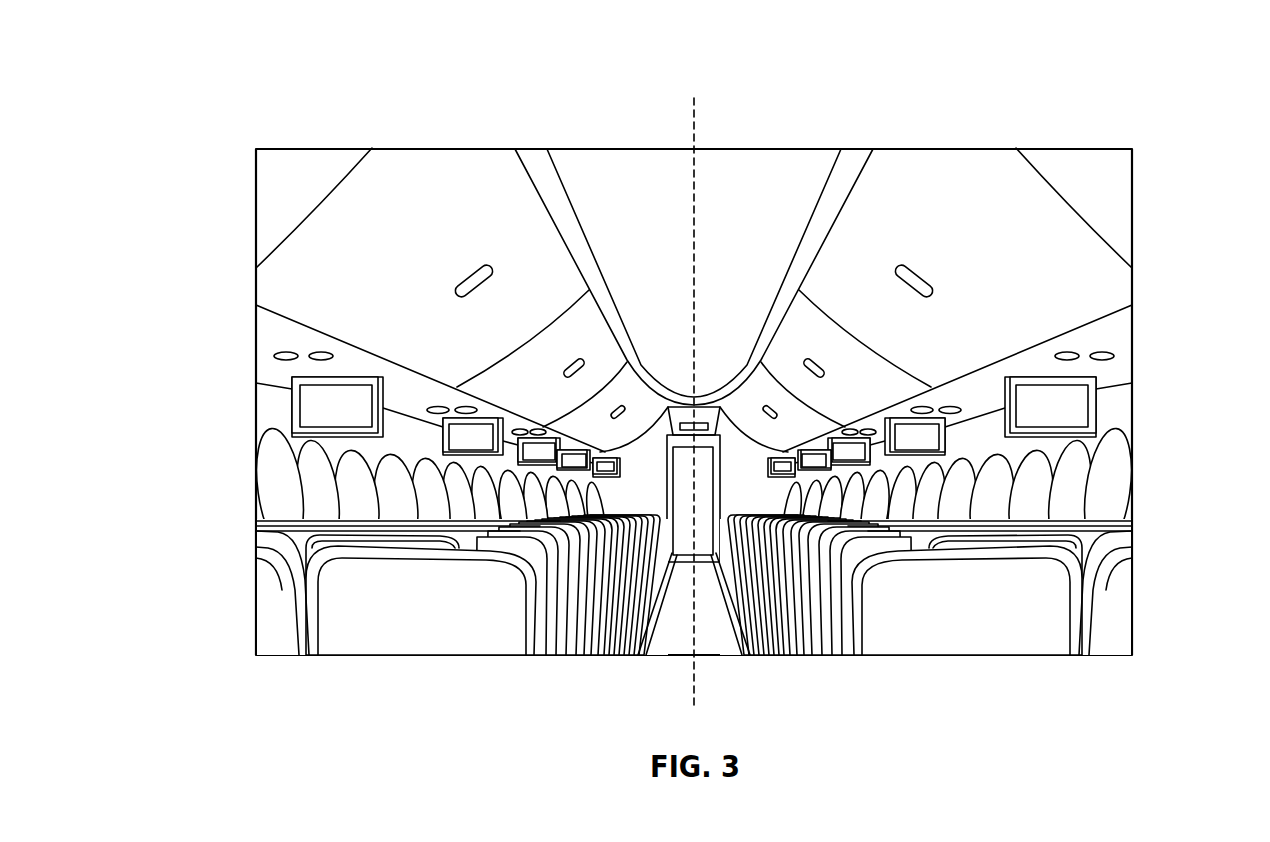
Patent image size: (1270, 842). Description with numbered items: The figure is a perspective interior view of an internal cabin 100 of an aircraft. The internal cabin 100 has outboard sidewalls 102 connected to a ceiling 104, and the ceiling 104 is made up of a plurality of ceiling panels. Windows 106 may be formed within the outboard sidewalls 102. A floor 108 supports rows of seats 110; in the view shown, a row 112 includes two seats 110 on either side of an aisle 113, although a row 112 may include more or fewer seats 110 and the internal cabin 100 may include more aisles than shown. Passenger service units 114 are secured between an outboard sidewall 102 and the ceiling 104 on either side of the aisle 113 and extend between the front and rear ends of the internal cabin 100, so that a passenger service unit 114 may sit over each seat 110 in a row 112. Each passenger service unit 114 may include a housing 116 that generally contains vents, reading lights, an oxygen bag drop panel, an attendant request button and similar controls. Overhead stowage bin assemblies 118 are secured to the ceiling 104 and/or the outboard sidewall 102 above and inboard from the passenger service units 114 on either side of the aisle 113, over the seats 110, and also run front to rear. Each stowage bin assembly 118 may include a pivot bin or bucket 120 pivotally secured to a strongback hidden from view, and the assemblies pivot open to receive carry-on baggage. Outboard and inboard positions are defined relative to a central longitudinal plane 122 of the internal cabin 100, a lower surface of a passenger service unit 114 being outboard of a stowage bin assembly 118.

The internal cabin 100 is at (201, 99).
The outboard sidewalls 102 is at (267, 407).
The ceiling 104 is at (753, 147).
The windows 106 is at (272, 497).
The floor 108 is at (680, 636).
The seats 110 is at (431, 642).
The row 112 is at (262, 612).
The aisle 113 is at (717, 636).
The passenger service units 114 is at (287, 357).
The housing 116 is at (263, 345).
The overhead stowage bin assemblies 118 is at (365, 203).
The pivot bin or bucket 120 is at (437, 163).
The central longitudinal plane 122 is at (692, 120).